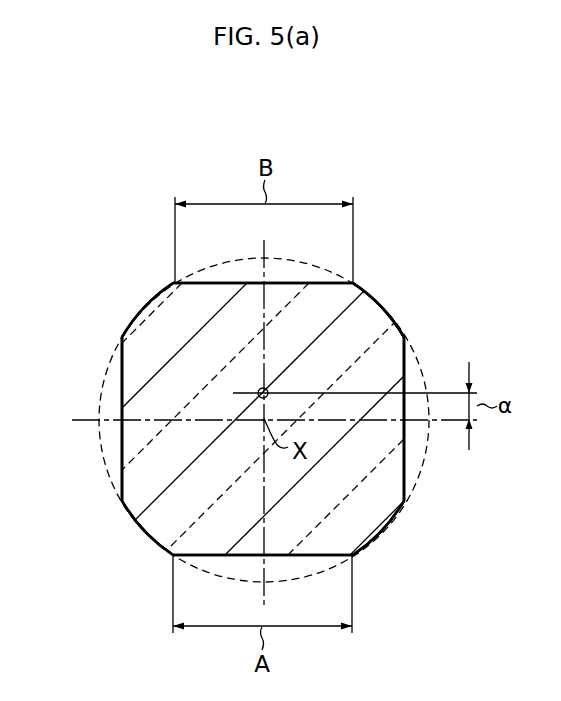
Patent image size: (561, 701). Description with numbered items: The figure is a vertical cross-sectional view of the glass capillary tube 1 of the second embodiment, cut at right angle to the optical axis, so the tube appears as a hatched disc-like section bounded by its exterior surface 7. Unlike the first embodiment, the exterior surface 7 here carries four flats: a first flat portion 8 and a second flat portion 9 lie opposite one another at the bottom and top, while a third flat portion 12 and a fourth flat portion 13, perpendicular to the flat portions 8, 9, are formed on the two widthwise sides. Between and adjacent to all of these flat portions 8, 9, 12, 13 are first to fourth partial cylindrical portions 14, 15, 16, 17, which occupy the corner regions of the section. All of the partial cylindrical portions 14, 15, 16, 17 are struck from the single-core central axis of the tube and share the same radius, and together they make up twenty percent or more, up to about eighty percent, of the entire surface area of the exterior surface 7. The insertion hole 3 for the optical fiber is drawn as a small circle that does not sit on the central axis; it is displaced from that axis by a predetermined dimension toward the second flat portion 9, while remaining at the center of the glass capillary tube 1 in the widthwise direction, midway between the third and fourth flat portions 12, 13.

The glass capillary tube 1 is at (431, 252).
The insertion hole 3 is at (258, 389).
The exterior surface 7 is at (397, 315).
The first flat portion 8 is at (232, 556).
The second flat portion 9 is at (299, 283).
The third flat portion 12 is at (122, 386).
The fourth flat portion 13 is at (406, 457).
The first partial cylindrical portion 14 is at (143, 308).
The second partial cylindrical portion 15 is at (376, 296).
The third partial cylindrical portion 16 is at (385, 527).
The fourth partial cylindrical portion 17 is at (143, 533).